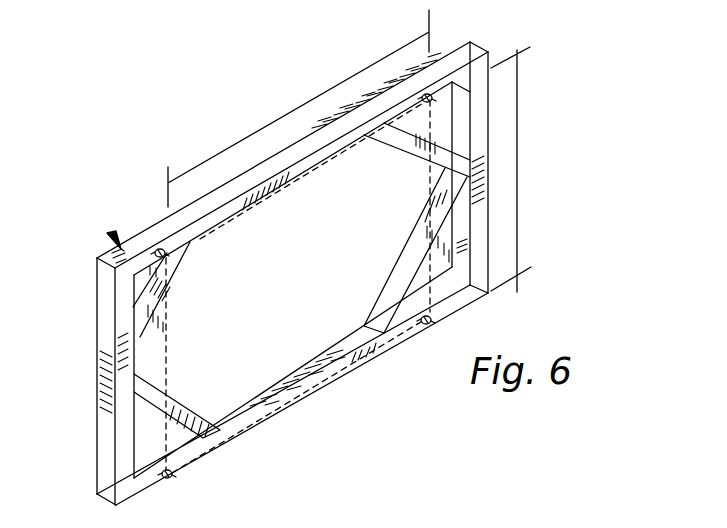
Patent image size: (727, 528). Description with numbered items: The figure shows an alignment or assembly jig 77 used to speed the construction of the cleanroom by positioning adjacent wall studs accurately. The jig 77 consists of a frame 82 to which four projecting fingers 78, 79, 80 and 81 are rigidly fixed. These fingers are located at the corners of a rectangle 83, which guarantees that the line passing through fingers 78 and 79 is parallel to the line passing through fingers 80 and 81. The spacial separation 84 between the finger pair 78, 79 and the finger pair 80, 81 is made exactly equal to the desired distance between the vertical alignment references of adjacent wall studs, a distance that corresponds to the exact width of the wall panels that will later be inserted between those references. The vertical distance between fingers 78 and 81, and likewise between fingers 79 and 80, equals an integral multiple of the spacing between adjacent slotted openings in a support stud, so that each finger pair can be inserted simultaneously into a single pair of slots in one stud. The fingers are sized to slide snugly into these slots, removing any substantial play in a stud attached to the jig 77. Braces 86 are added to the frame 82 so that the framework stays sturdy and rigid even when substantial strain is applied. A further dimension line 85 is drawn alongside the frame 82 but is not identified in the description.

The alignment jig 77 is at (110, 233).
The projecting finger 78 is at (429, 94).
The projecting finger 79 is at (432, 318).
The projecting finger 80 is at (172, 475).
The projecting finger 81 is at (190, 243).
The frame 82 is at (316, 141).
The rectangle 83 is at (430, 190).
The spacial separation 84 is at (303, 104).
The frame side extension 85 is at (516, 150).
The braces 86 is at (412, 150).